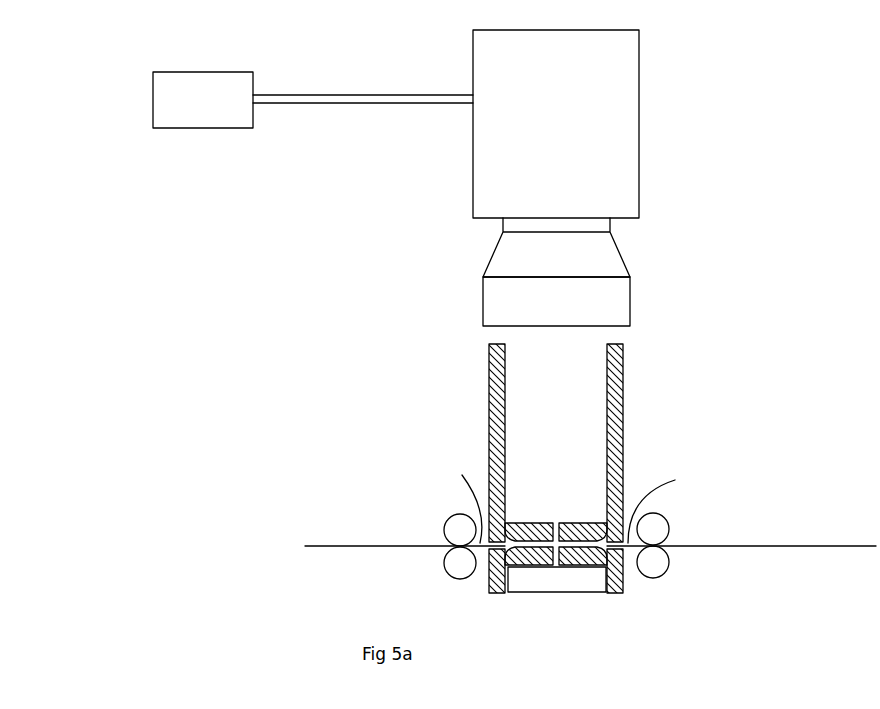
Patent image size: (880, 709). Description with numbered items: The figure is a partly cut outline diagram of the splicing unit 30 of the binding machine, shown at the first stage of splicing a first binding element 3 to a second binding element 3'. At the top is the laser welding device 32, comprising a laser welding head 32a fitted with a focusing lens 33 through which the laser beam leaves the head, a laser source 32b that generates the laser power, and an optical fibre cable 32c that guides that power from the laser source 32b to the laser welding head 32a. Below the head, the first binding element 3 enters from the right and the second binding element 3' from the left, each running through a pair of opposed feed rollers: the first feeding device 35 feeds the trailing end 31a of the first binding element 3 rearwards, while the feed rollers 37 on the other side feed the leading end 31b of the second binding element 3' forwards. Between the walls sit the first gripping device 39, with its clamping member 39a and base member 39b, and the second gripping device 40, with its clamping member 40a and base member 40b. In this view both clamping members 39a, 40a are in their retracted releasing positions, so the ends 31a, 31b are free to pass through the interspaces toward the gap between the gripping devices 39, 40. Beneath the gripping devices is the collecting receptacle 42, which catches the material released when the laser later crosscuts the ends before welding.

The first binding element 3 is at (741, 517).
The second binding element 3' is at (405, 517).
The splicing unit 30 is at (594, 444).
The trailing end 31a is at (672, 503).
The leading end 31b is at (463, 493).
The laser welding device 32 is at (445, 150).
The laser welding head 32a is at (655, 205).
The laser source 32b is at (210, 122).
The optical fibre cable 32c is at (347, 100).
The focusing lens 33 is at (495, 297).
The first feeding device 35 is at (680, 563).
The upstream roller pair 37 is at (427, 546).
The first gripping device 39 is at (611, 541).
The clamping member 39a is at (572, 523).
The base member 39b is at (587, 559).
The second gripping device 40 is at (528, 536).
The clamping member 40a is at (532, 523).
The base member 40b is at (522, 562).
The collecting receptacle 42 is at (553, 585).